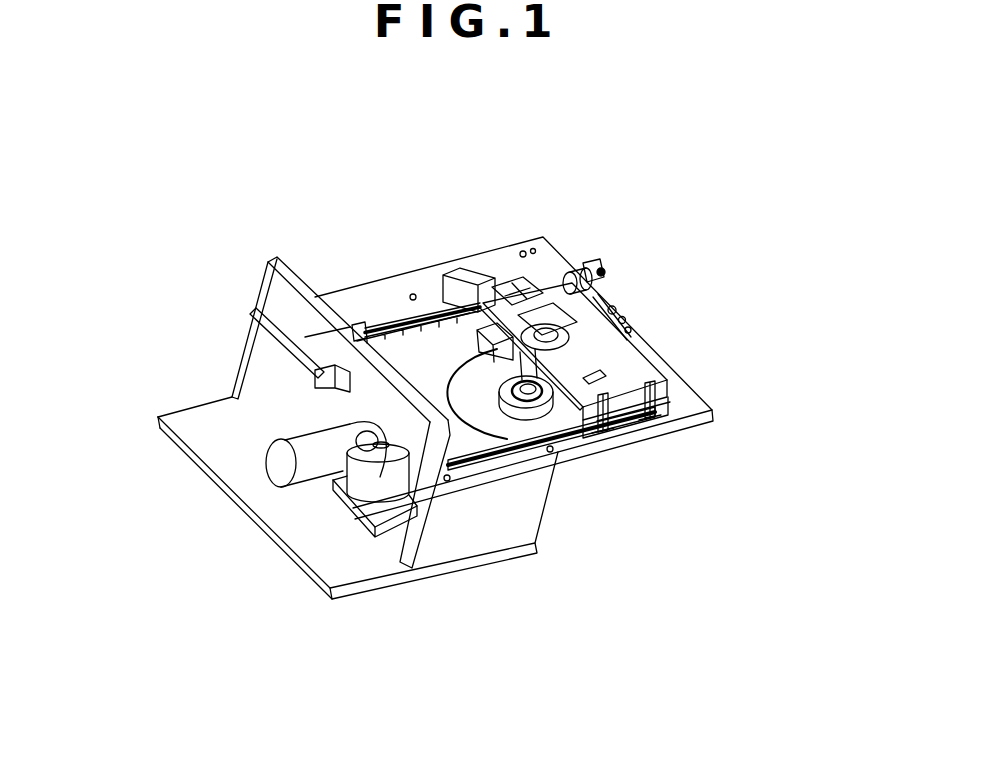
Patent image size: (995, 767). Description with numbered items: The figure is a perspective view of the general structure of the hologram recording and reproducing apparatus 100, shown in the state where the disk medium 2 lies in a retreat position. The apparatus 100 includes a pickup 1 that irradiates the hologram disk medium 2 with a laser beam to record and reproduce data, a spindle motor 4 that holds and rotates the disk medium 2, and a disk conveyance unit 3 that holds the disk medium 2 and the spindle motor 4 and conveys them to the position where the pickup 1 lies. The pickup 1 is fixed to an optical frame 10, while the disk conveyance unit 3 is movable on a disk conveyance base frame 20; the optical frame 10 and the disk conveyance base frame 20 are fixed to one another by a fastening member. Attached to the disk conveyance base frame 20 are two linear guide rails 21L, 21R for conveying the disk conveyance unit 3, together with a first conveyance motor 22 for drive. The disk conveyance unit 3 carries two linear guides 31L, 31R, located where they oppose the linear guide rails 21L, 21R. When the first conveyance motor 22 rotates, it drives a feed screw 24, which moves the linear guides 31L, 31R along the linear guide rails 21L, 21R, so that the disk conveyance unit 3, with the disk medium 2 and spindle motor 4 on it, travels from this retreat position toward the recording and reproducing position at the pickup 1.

The hologram recording and reproducing apparatus 100 is at (882, 153).
The optical frame 10 is at (203, 423).
The disk conveyance base frame 20 is at (353, 295).
The pickup 1 is at (333, 475).
The linear guide rail 21R is at (402, 320).
The feed screw 24 is at (428, 330).
The linear guide 31R is at (477, 300).
The disk conveyance unit 3 is at (725, 323).
The first conveyance motor 22 is at (690, 227).
The disk medium 2 is at (497, 420).
The spindle motor 4 is at (528, 380).
The linear guide rail 21L is at (562, 435).
The linear guide 31L is at (600, 435).